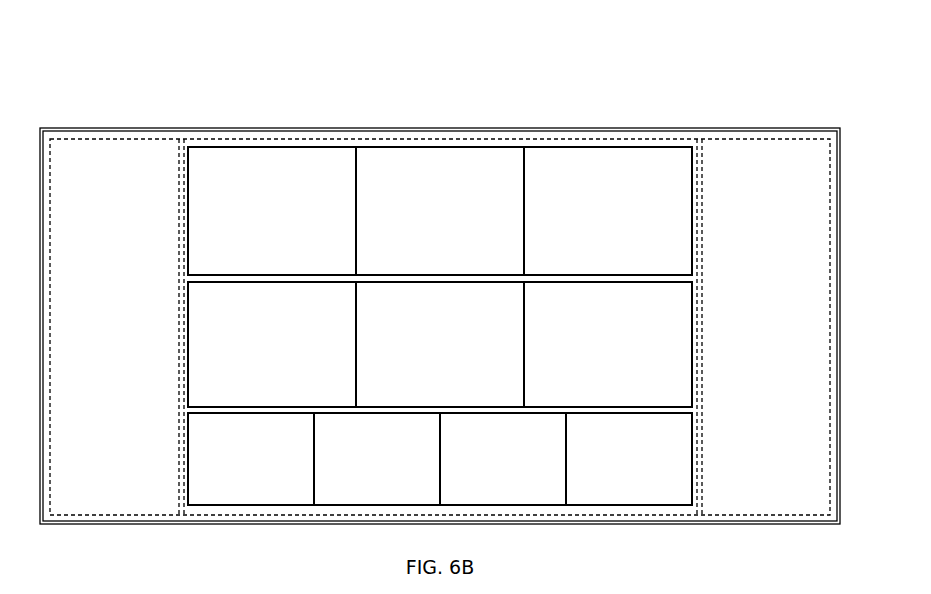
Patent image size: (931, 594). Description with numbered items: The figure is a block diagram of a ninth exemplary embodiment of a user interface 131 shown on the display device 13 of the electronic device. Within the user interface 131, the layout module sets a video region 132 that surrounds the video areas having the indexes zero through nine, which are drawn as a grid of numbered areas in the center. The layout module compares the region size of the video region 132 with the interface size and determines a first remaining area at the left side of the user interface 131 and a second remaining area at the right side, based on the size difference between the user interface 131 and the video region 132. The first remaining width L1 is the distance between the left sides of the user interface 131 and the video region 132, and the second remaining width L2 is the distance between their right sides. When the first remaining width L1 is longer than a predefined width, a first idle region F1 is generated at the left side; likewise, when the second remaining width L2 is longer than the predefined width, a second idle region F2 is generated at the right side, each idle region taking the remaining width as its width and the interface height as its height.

The display device 13 is at (263, 128).
The user interface 131 is at (383, 133).
The video region 132 is at (607, 148).
The first idle region F1 is at (64, 288).
The second idle region F2 is at (723, 305).
The first remaining width L1 is at (178, 459).
The second remaining width L2 is at (829, 459).